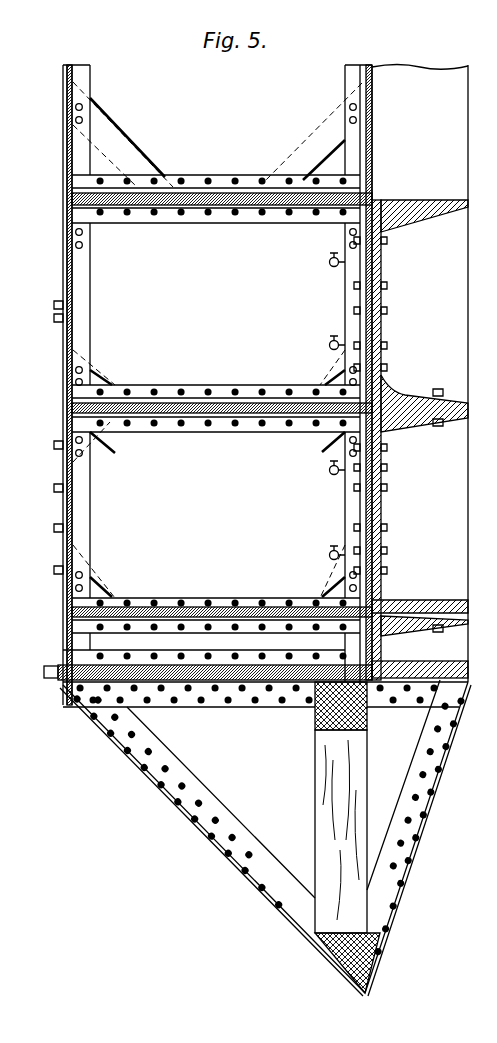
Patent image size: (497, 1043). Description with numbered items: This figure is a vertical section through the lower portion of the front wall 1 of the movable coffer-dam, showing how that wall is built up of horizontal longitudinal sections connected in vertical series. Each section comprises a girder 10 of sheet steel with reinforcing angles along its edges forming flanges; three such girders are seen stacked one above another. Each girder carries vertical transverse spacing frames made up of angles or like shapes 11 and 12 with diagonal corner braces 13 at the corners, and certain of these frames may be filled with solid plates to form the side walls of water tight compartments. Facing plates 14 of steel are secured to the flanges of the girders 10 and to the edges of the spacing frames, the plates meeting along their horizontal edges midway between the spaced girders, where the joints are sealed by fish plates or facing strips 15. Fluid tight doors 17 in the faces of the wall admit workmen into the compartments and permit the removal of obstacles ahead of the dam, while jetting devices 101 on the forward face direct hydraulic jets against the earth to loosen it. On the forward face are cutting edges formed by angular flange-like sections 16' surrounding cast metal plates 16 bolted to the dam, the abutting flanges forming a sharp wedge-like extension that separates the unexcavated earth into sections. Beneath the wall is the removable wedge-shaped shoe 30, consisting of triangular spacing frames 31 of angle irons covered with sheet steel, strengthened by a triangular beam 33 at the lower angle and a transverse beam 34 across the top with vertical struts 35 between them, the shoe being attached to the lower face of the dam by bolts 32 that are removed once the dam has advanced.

The front wall of the coffer-dam 1 is at (226, 311).
The girder 10 is at (227, 200).
The angle of spacing frame 11 is at (83, 515).
The angle of spacing frame 12 is at (263, 387).
The diagonal corner brace 13 is at (122, 148).
The facing plate 14 is at (73, 122).
The fish plate 15 is at (72, 300).
The cast metal plate 16 is at (423, 229).
The angular flange-like section 16' is at (420, 420).
The fluid tight door 17 is at (68, 258).
The jetting device 101 is at (328, 262).
The removable shoe 30 is at (400, 897).
The triangular spacing frame 31 is at (273, 708).
The bolt 32 is at (55, 687).
The triangular beam 33 is at (335, 958).
The transverse beam 34 is at (357, 725).
The vertical strut 35 is at (360, 793).